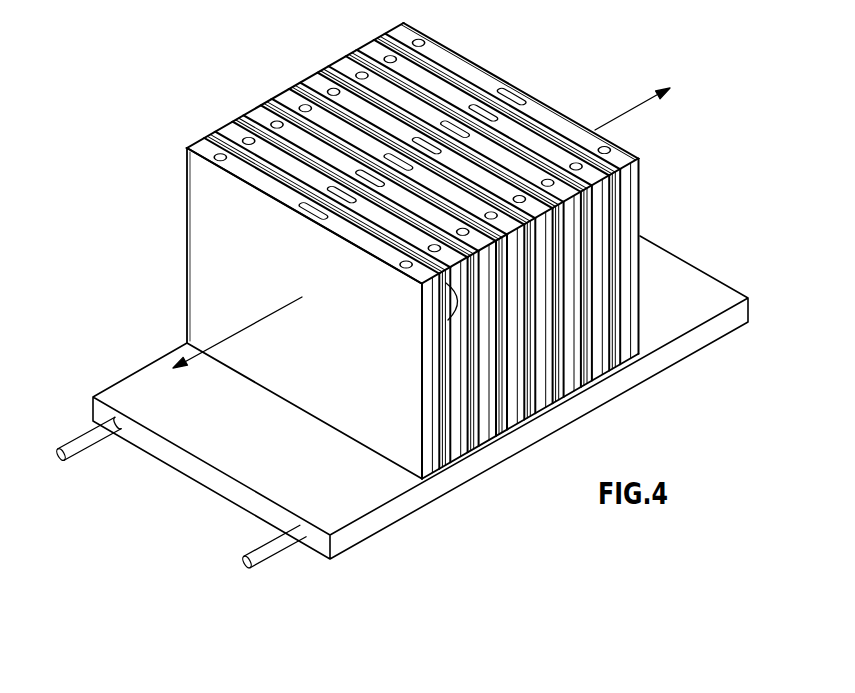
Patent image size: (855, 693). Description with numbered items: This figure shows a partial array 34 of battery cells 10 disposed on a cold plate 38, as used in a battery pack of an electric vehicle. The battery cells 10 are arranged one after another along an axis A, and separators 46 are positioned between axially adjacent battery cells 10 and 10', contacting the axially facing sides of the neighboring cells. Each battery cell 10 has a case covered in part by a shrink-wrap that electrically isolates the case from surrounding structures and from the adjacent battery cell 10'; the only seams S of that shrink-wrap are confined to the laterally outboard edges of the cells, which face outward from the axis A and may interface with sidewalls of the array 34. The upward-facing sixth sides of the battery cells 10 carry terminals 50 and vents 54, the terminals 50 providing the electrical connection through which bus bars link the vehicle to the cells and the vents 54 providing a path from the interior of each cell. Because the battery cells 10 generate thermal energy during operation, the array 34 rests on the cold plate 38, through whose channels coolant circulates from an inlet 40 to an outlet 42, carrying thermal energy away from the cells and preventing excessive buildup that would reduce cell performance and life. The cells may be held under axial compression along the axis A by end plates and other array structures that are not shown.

The battery cell 10 is at (486, 110).
The adjacent battery cell 10' is at (509, 97).
The array 34 is at (698, 112).
The cold plate 38 is at (676, 318).
The inlet 40 is at (60, 440).
The outlet 42 is at (252, 547).
The separator 46 is at (450, 318).
The terminal 50 is at (429, 143).
The vent 54 is at (519, 91).
The seam S is at (633, 217).
The axis A is at (257, 320).